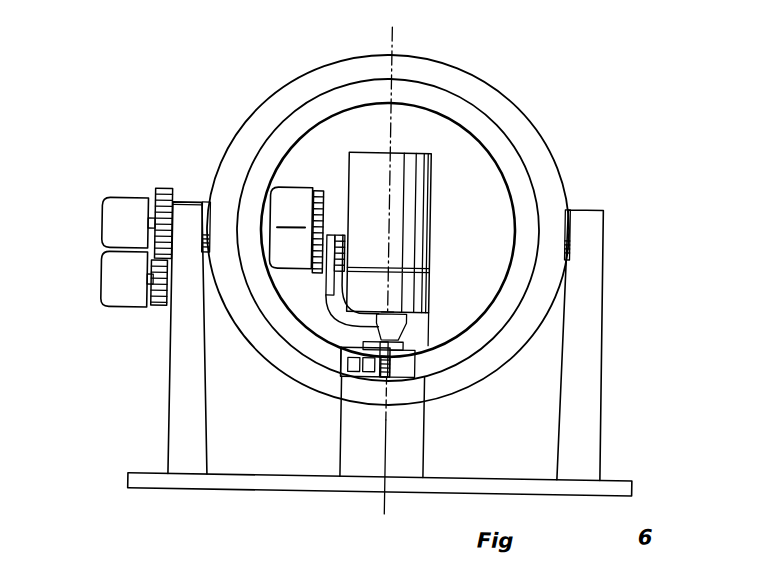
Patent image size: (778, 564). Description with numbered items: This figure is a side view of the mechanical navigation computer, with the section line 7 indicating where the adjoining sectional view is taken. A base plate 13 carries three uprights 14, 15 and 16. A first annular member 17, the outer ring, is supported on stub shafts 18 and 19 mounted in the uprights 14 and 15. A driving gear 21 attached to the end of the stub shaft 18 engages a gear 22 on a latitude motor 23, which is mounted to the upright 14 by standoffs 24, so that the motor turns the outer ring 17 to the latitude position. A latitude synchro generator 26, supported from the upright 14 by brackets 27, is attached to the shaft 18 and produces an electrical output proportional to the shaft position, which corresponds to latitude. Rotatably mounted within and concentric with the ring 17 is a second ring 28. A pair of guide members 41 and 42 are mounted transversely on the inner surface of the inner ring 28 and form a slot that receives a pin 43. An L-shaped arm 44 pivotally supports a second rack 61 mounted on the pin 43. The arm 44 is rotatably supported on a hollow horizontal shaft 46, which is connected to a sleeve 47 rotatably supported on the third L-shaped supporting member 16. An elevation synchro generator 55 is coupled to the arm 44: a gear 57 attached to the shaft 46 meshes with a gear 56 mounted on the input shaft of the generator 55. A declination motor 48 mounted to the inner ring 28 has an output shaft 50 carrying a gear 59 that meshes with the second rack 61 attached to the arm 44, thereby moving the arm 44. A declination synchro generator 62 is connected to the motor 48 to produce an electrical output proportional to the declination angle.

The section line 7- 7 is at (386, 27).
The base plate 13 is at (614, 478).
The upright 14 is at (172, 456).
The upright 15 is at (590, 295).
The upright 16 is at (413, 467).
The first annular member 17 is at (488, 100).
The stub shaft 18 is at (150, 226).
The stub shaft 19 is at (605, 222).
The driving gear 21 is at (172, 206).
The gear 22 is at (152, 312).
The latitude motor 23 is at (104, 291).
The standoffs 24 is at (163, 312).
The latitude synchro generator 26 is at (103, 227).
The brackets 27 is at (164, 192).
The second ring 28 is at (497, 141).
The guide member 41 is at (328, 312).
The guide member 42 is at (417, 380).
The pin 43 is at (403, 335).
The L-shaped arm 44 is at (348, 313).
The horizontal shaft 46 is at (333, 230).
The sleeve 47 is at (420, 168).
The declination motor 48 is at (356, 378).
The output shaft 50 is at (372, 378).
The elevation synchro generator 55 is at (290, 198).
The gear 56 is at (318, 200).
The gear 57 is at (316, 274).
The gear 59 is at (395, 378).
The second rack 61 is at (392, 312).
The declination synchro generator 62 is at (345, 372).